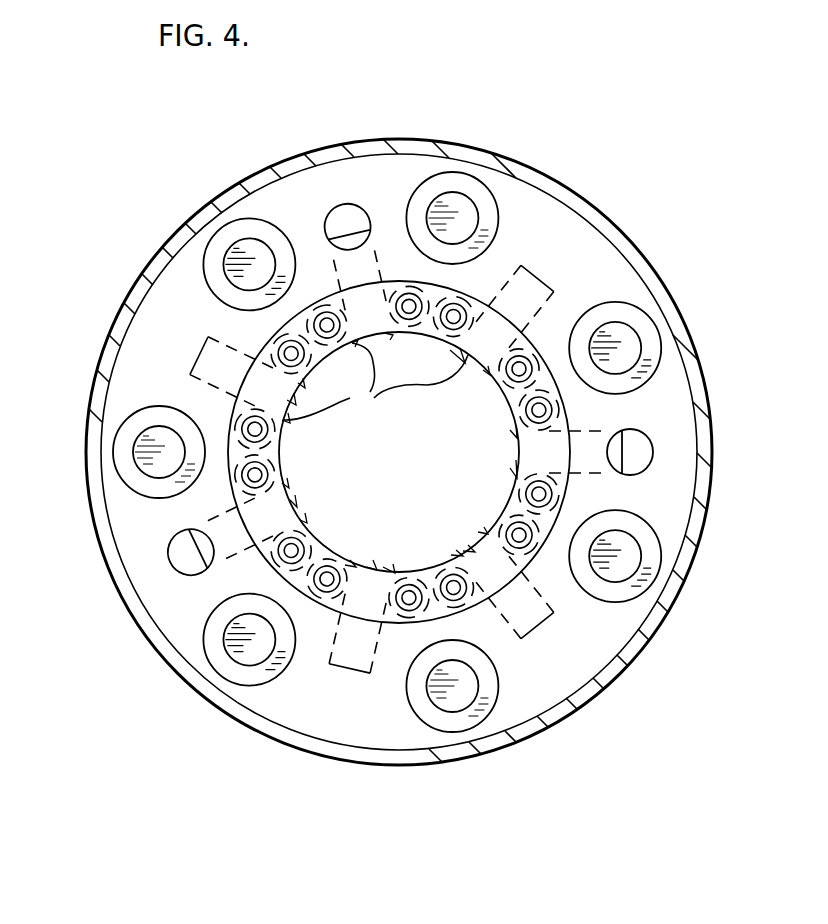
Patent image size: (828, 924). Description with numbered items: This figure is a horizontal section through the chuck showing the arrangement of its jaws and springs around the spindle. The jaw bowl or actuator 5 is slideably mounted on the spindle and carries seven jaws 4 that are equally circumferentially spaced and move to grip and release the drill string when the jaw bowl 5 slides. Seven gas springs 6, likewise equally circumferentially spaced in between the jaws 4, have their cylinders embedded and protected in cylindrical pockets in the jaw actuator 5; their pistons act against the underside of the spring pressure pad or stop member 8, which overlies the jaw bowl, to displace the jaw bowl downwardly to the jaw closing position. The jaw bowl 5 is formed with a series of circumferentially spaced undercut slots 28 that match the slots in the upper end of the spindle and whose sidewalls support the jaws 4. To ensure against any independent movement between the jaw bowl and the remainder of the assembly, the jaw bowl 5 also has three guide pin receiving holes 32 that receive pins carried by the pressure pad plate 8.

The jaws 4 is at (399, 452).
The jaw bowl or actuator 5 is at (532, 238).
The gas springs 6 is at (222, 227).
The spring pressure pad or stop member 8 is at (676, 602).
The undercut slots 28 is at (191, 366).
The guide pin receiving holes 32 is at (338, 205).